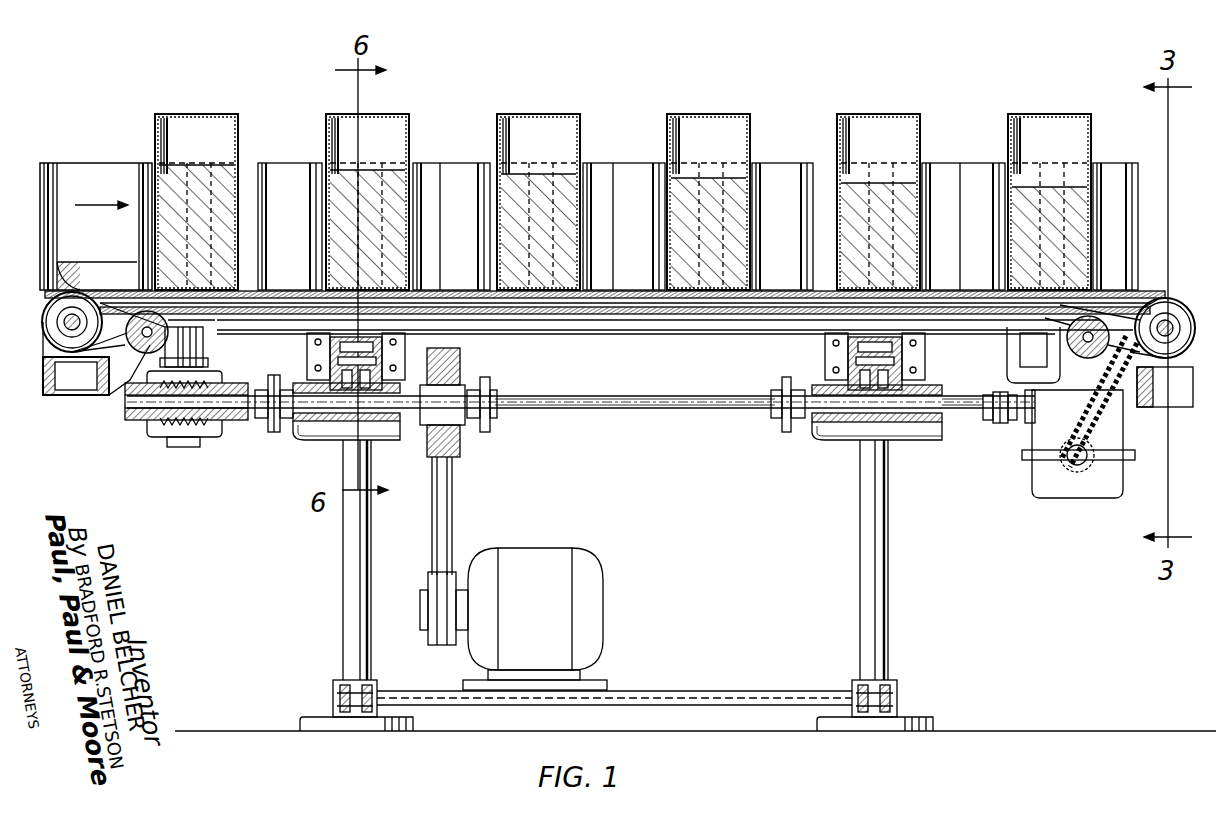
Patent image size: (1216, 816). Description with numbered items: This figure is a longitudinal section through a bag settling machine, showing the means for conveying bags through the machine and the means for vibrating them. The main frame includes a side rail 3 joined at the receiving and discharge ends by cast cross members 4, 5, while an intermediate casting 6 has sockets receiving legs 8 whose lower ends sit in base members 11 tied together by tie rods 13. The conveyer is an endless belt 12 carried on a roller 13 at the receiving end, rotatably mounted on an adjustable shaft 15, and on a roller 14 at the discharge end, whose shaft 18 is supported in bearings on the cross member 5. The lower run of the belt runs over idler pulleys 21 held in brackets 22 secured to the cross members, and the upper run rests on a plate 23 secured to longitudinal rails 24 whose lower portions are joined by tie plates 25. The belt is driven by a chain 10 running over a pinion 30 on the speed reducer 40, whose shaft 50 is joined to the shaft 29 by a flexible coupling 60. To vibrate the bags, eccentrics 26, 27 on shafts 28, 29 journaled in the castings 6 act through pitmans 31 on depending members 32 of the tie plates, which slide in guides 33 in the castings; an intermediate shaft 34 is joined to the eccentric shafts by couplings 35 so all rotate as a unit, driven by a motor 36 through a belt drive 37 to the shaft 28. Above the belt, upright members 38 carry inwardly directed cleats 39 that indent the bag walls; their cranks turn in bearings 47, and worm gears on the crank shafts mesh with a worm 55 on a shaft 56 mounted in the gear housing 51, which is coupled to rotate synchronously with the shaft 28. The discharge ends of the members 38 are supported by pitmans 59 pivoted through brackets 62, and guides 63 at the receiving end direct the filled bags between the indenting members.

The side rail 3 is at (627, 392).
The cross member 4 is at (47, 395).
The cross member 5 is at (1188, 407).
The casting 6 is at (306, 440).
The leg 8 is at (345, 547).
The chain 10 is at (1157, 407).
The base member 11 is at (313, 725).
The endless belt 12 is at (606, 300).
The roller 13 is at (48, 310).
The roller 14 is at (1172, 300).
The shaft 15 is at (78, 318).
The shaft 18 is at (1158, 300).
The idler pulley 21 is at (205, 340).
The bracket 22 is at (122, 358).
The plate 23 is at (700, 314).
The rail 24 is at (545, 334).
The tie plate 25 is at (345, 333).
The eccentric 26 is at (346, 421).
The eccentric 27 is at (866, 418).
The shaft 28 is at (272, 433).
The shaft 29 is at (966, 409).
The pinion 30 is at (1087, 447).
The pitman 31 is at (342, 376).
The depending member 32 is at (330, 347).
The guide 33 is at (338, 361).
The intermediate shaft 34 is at (674, 408).
The coupling 35 is at (490, 432).
The motor 36 is at (598, 600).
The belt drive 37 is at (455, 510).
The vertically disposed member 38 is at (627, 163).
The cleat 39 is at (283, 165).
The speed reducer 40 is at (1096, 498).
The bearing 47 is at (205, 354).
The shaft 50 is at (1026, 420).
The gear housing 51 is at (152, 437).
The worm 55 is at (186, 430).
The shaft 56 is at (136, 421).
The pitman 59 is at (1030, 348).
The flexible coupling 60 is at (1000, 424).
The bracket 62 is at (1010, 340).
The guide 63 is at (93, 160).